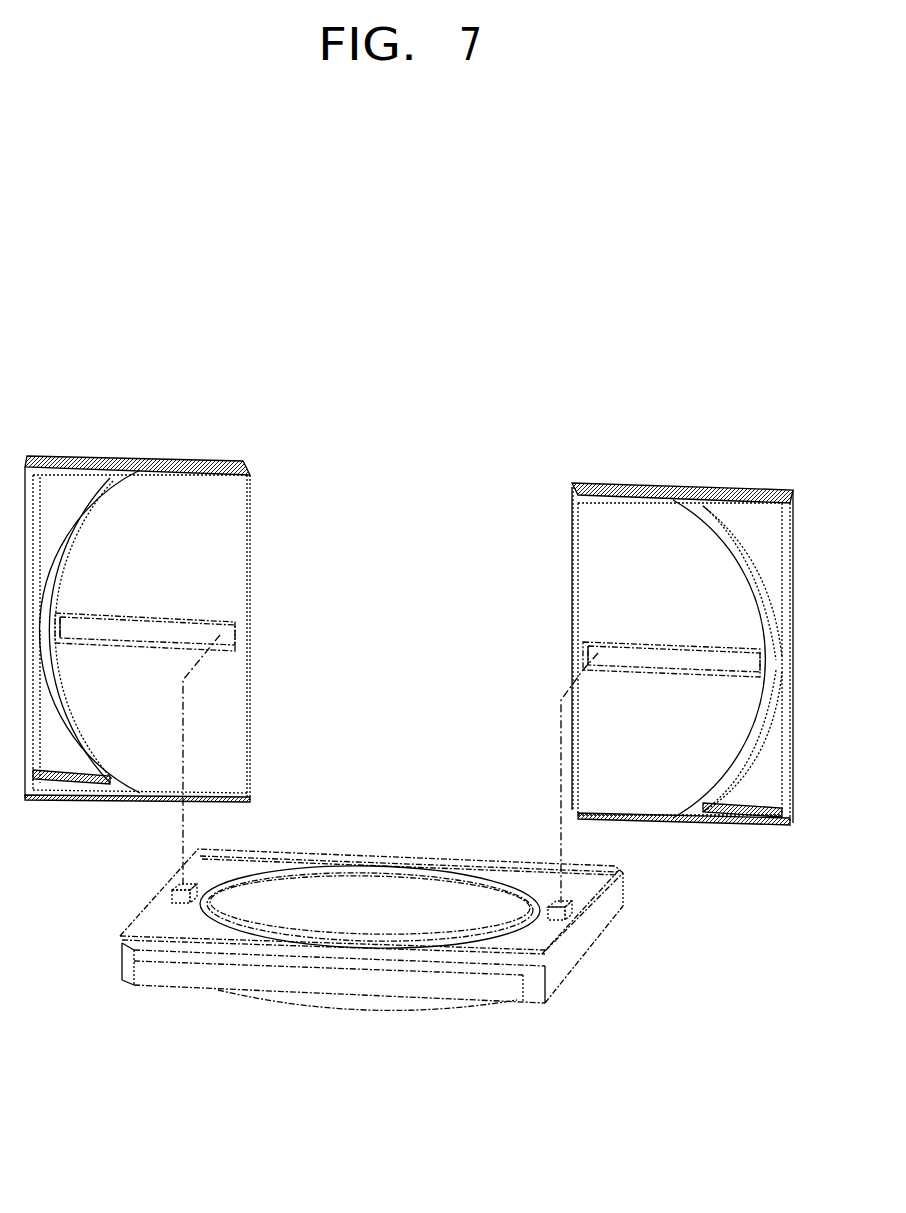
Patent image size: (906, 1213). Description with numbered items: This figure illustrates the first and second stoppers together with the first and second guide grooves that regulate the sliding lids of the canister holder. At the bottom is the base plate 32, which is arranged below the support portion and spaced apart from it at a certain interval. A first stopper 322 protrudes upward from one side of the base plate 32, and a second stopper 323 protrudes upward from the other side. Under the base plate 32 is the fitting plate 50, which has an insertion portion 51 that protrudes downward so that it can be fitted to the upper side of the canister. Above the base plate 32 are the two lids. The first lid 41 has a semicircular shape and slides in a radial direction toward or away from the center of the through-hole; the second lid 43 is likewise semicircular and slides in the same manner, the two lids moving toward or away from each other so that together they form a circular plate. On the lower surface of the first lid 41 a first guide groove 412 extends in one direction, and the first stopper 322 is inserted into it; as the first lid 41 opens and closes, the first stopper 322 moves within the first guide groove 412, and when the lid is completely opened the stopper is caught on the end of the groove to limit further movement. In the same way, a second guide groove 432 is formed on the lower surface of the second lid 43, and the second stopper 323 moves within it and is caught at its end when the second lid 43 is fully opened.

The first lid 41 is at (167, 670).
The first guide groove 412 is at (165, 632).
The second lid 43 is at (654, 693).
The second guide groove 432 is at (652, 658).
The base plate 32 is at (200, 932).
The first stopper 322 is at (172, 893).
The second stopper 323 is at (562, 912).
The fitting plate 50 is at (442, 987).
The insertion portion 51 is at (333, 1004).